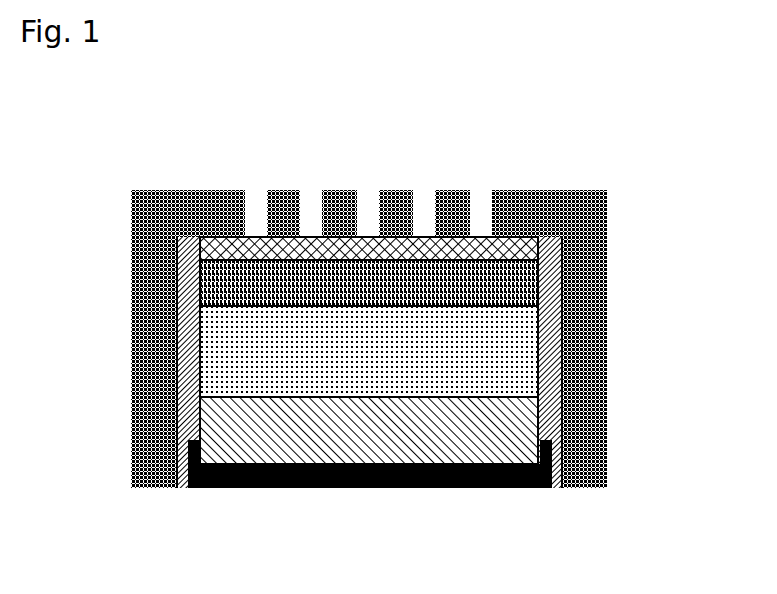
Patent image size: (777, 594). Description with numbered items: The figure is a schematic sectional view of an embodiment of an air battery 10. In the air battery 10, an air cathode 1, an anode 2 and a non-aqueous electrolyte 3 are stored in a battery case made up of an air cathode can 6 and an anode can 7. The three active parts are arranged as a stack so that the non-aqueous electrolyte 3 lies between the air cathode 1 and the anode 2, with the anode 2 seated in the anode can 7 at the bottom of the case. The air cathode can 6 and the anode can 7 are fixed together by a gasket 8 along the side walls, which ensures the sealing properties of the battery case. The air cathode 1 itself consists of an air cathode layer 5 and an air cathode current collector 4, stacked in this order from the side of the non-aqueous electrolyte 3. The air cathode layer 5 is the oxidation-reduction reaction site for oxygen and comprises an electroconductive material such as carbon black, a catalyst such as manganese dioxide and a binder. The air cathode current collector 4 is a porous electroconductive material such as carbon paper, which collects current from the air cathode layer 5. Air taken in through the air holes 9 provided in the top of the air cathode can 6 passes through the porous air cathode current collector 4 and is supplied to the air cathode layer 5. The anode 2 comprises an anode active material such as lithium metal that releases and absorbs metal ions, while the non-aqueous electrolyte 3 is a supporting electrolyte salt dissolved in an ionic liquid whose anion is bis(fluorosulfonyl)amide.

The air cathode 1 is at (466, 266).
The anode 2 is at (530, 423).
The non-aqueous electrolyte 3 is at (530, 350).
The air cathode current collector 4 is at (530, 245).
The air cathode layer 5 is at (530, 285).
The air cathode can 6 is at (578, 478).
The anode can 7 is at (375, 488).
The gasket 8 is at (188, 410).
The air hole 9 is at (478, 205).
The air battery 10 is at (390, 326).